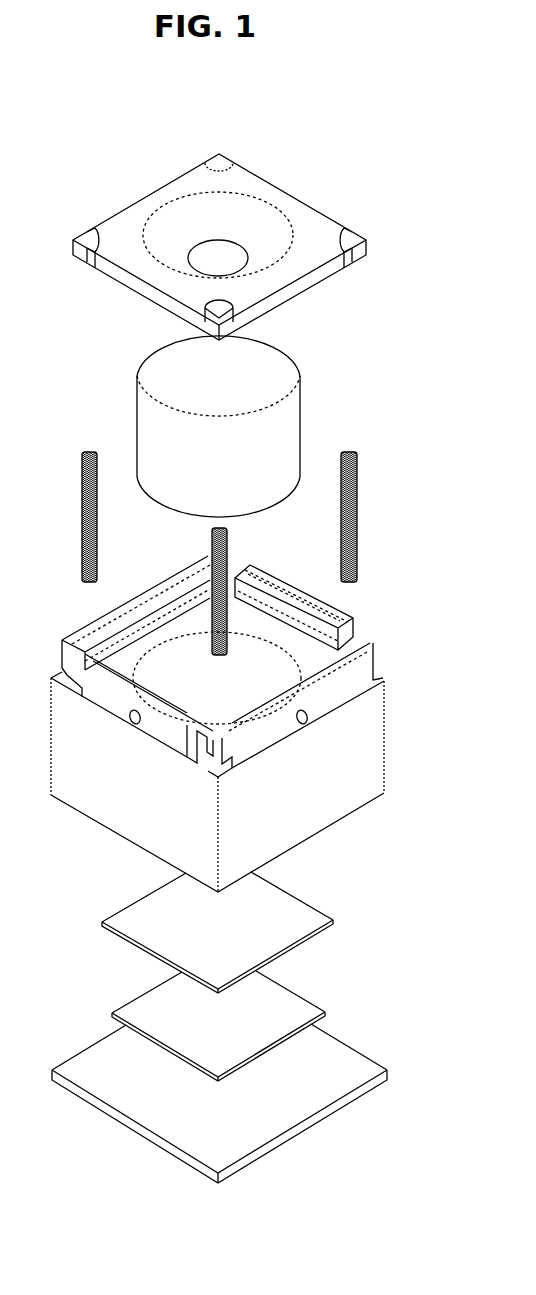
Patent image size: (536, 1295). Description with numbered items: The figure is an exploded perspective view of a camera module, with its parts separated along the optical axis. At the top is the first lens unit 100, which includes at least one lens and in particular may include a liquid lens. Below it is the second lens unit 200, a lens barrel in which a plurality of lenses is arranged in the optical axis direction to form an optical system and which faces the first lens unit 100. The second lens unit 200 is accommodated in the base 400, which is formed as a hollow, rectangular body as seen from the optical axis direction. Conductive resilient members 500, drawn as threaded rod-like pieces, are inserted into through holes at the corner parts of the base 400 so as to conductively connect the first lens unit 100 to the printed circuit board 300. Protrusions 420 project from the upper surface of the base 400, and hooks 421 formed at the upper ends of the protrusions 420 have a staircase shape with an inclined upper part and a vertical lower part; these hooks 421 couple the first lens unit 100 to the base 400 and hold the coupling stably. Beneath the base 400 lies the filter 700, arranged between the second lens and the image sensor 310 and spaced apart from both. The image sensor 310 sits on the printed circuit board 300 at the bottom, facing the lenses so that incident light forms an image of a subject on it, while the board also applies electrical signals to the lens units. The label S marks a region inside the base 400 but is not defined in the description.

The first lens unit 100 is at (304, 214).
The second lens unit 200 is at (293, 412).
The resilient members 500 is at (358, 470).
The base 400 is at (378, 739).
The protrusions 420 is at (353, 631).
The hooks 421 is at (271, 598).
The sample S is at (236, 690).
The filter 700 is at (303, 913).
The image sensor 310 is at (300, 1003).
The printed circuit board 300 is at (355, 1060).